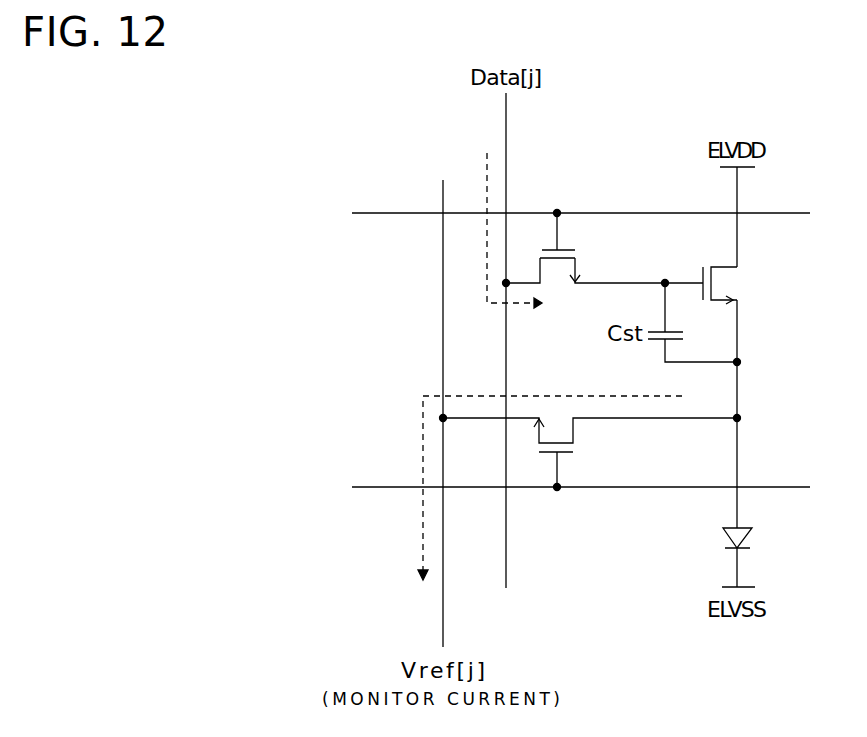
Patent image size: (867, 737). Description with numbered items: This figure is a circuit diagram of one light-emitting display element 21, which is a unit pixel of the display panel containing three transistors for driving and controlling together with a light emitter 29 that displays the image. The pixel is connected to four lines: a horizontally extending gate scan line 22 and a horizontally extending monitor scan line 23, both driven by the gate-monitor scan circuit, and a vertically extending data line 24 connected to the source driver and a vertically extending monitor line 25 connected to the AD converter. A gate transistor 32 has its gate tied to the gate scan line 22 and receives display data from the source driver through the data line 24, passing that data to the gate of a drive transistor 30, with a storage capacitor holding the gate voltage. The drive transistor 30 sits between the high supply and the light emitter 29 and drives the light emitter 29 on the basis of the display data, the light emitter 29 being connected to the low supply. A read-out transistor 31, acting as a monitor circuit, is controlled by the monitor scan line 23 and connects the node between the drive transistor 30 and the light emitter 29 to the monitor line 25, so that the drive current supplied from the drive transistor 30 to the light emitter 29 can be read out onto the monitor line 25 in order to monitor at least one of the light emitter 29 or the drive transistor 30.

The light-emitting display element 21 is at (712, 78).
The gate scan line 22 is at (373, 212).
The monitor scan line 23 is at (373, 486).
The data line 24 is at (508, 122).
The monitor line 25 is at (445, 622).
The light emitter 29 is at (745, 528).
The drive transistor 30 is at (703, 278).
The read-out transistor 31 is at (565, 454).
The gate transistor 32 is at (563, 253).